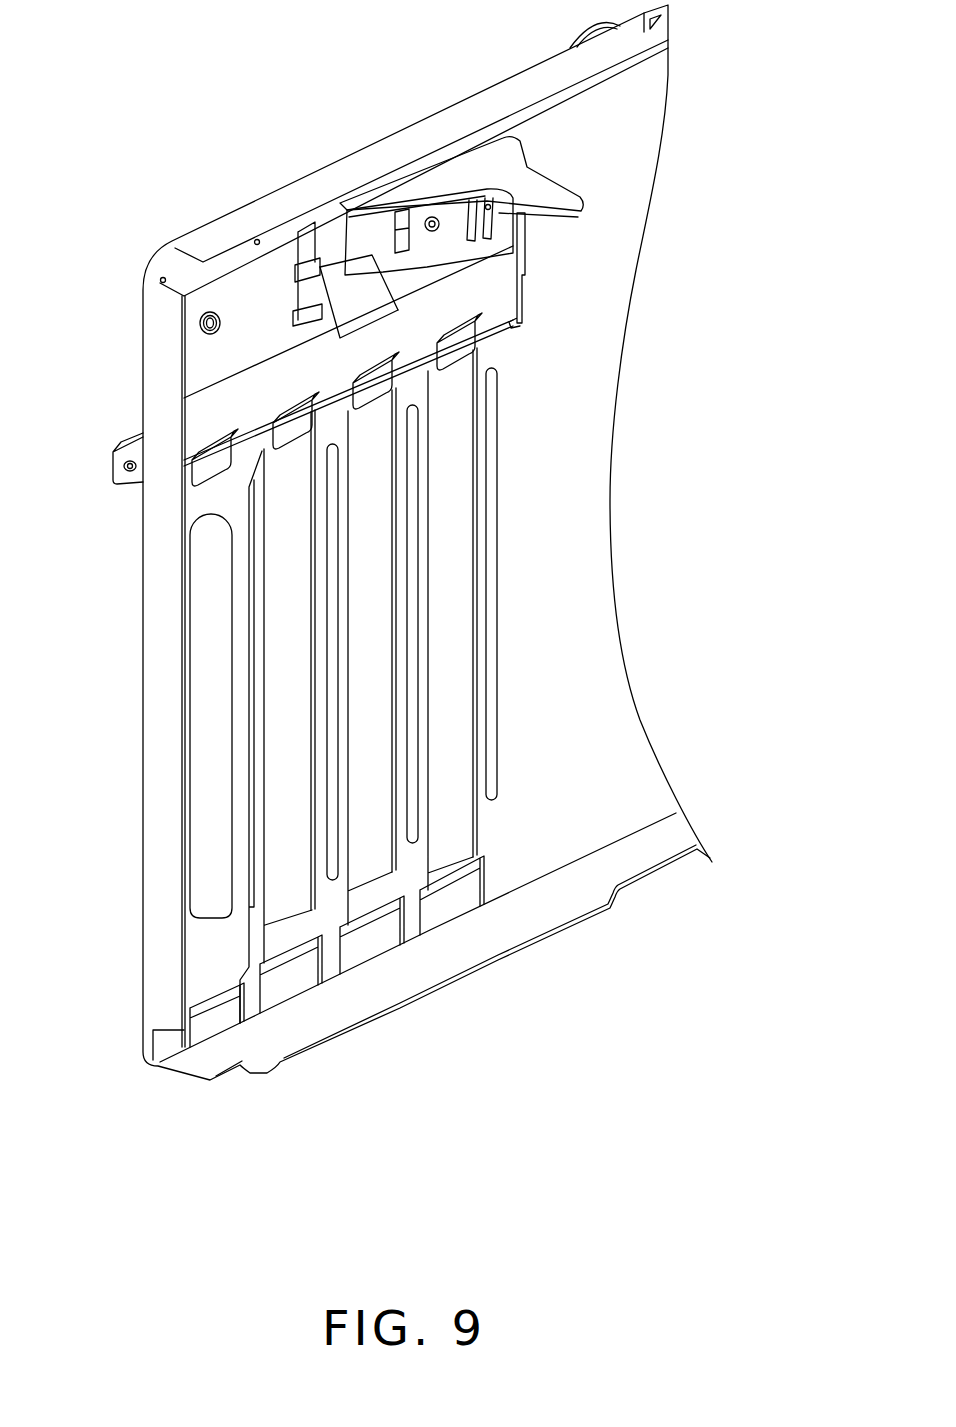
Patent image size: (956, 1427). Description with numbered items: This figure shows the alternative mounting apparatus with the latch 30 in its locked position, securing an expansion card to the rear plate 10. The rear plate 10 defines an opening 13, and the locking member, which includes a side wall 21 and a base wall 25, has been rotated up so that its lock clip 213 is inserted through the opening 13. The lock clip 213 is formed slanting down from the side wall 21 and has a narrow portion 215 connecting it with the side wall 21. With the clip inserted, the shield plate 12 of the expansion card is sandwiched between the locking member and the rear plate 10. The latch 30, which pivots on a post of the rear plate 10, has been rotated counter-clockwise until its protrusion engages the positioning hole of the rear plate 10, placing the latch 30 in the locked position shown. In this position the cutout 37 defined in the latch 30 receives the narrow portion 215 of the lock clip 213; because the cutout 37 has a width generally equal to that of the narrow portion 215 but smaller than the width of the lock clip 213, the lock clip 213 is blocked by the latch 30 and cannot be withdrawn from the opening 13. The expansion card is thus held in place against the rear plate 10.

The rear plate 10 is at (617, 227).
The shield plate 12 is at (207, 792).
The opening 13 is at (290, 301).
The side wall 21 is at (500, 275).
The lock clip 213 is at (362, 302).
The narrow portion 215 is at (353, 287).
The base wall 25 is at (137, 447).
The latch 30 is at (538, 187).
The cutout 37 is at (350, 272).